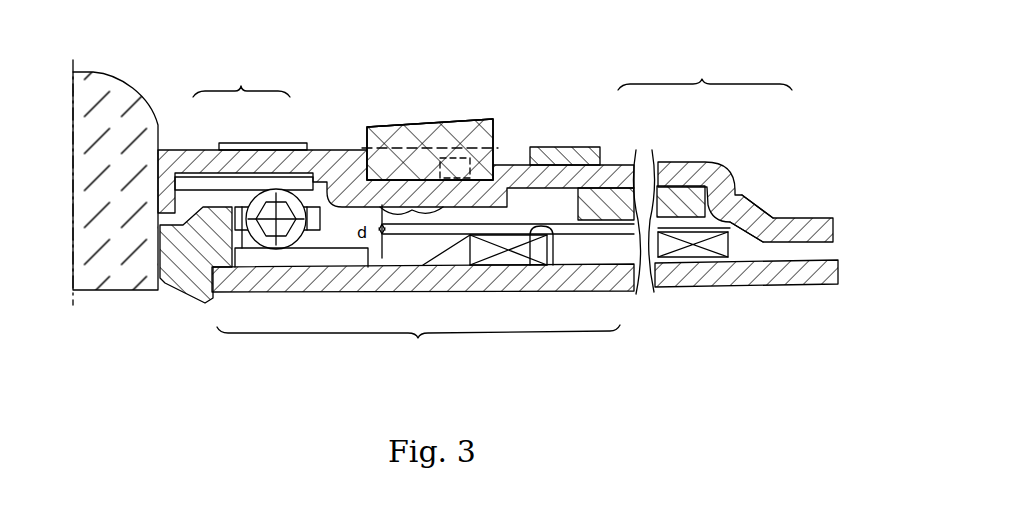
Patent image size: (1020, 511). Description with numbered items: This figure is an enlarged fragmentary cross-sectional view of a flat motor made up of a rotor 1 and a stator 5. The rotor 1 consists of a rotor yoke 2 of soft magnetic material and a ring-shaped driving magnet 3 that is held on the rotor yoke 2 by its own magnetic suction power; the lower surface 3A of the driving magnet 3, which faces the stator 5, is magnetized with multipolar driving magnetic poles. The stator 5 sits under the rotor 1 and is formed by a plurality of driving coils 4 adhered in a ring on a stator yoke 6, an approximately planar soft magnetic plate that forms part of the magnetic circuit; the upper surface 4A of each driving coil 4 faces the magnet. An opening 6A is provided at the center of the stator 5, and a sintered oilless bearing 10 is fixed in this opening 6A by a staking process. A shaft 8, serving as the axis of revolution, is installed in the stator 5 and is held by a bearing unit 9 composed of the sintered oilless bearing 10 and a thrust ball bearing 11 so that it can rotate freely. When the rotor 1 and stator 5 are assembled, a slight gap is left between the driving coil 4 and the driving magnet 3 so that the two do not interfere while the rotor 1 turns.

The rotor 1 is at (710, 74).
The rotor yoke 2 is at (613, 172).
The driving magnet 3 is at (641, 188).
The lower surface of the driving magnet 3A is at (748, 193).
The driving coil 4 is at (510, 258).
The upper surface of the driving coil 4A is at (552, 245).
The stator 5 is at (429, 365).
The stator yoke 6 is at (612, 275).
The opening 6A is at (213, 297).
The shaft 8 is at (113, 105).
The bearing unit 9 is at (247, 88).
The sintered oilless bearing 10 is at (203, 190).
The thrust ball bearing 11 is at (273, 205).